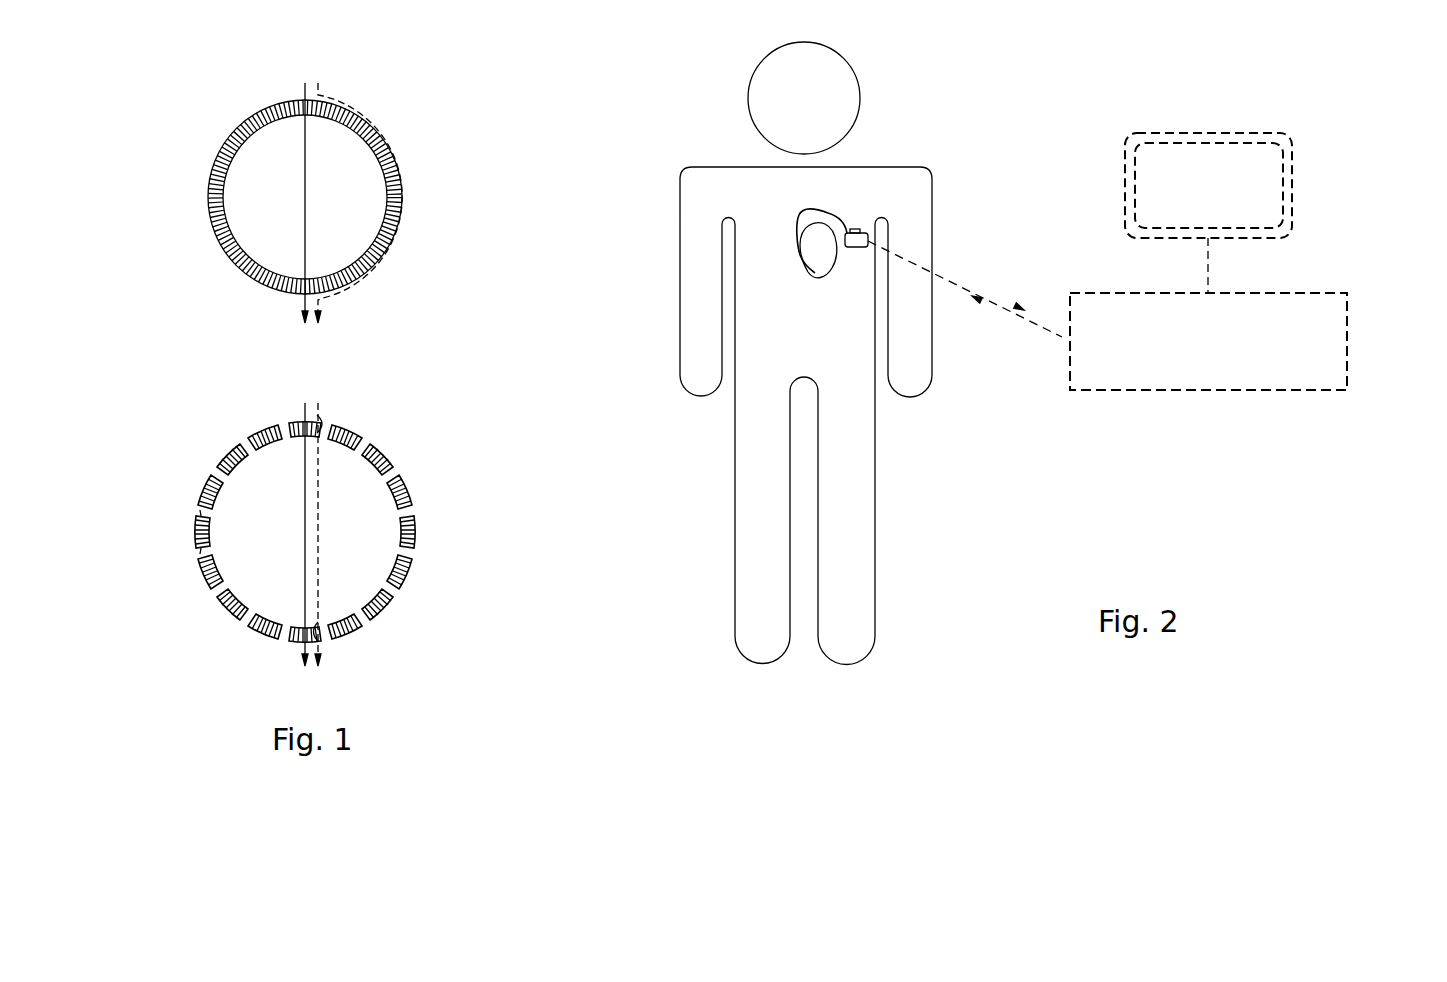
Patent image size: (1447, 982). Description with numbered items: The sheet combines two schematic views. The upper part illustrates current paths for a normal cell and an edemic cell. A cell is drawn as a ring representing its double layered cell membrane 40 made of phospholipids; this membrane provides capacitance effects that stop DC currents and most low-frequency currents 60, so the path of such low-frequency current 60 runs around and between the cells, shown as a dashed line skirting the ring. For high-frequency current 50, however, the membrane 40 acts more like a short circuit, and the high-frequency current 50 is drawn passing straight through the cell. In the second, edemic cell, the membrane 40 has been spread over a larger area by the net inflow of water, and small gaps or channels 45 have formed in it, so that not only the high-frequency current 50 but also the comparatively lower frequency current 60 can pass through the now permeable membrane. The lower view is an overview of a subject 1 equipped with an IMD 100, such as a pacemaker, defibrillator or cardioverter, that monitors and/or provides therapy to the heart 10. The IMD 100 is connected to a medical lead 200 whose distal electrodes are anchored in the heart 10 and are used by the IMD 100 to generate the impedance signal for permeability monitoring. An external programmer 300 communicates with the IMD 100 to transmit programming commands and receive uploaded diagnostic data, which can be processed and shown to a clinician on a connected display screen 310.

In FIG. 2, the subject 1 is at (683, 176).
In FIG. 2, the heart 10 is at (816, 279).
In FIG. 1, the cell membrane 40 is at (208, 197).
In FIG. 1, the gaps or channels 45 is at (200, 523).
In FIG. 1, the high-frequency current 50 is at (305, 197).
In FIG. 1, the low-frequency current 60 is at (408, 190).
In FIG. 2, the implantable medical device 100 is at (853, 230).
In FIG. 2, the medical lead 200 is at (798, 245).
In FIG. 2, the programmer 300 is at (1348, 344).
In FIG. 2, the display screen 310 is at (1293, 186).